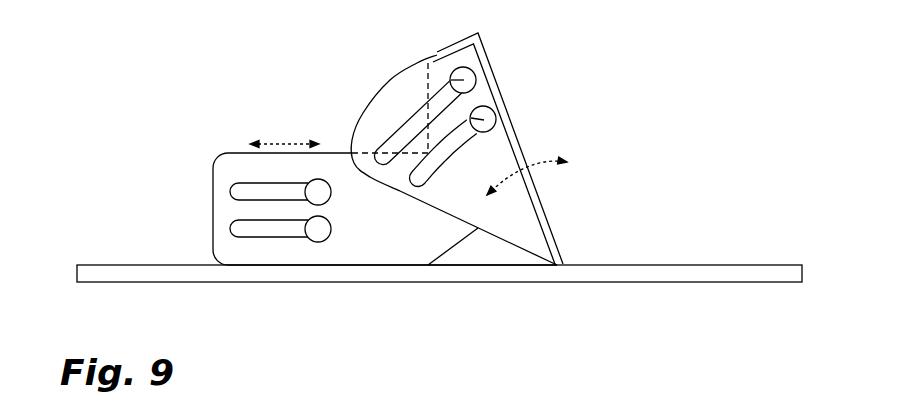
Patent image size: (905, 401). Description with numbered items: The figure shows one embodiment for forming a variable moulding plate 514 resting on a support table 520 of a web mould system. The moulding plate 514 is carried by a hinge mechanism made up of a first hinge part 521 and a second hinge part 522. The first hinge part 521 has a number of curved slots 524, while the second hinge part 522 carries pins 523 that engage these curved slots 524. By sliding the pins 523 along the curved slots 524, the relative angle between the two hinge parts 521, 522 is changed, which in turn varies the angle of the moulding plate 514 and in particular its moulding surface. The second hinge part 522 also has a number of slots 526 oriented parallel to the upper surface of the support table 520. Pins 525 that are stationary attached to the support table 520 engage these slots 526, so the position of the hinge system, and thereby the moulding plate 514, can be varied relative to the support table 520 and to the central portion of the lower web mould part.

The variable moulding plate 514 is at (528, 99).
The support table 520 is at (620, 271).
The first hinge part 521 is at (527, 238).
The second hinge part 522 is at (413, 243).
The pins 523 is at (428, 62).
The curved slots 524 is at (416, 112).
The pins 525 is at (318, 192).
The slots 526 is at (278, 192).